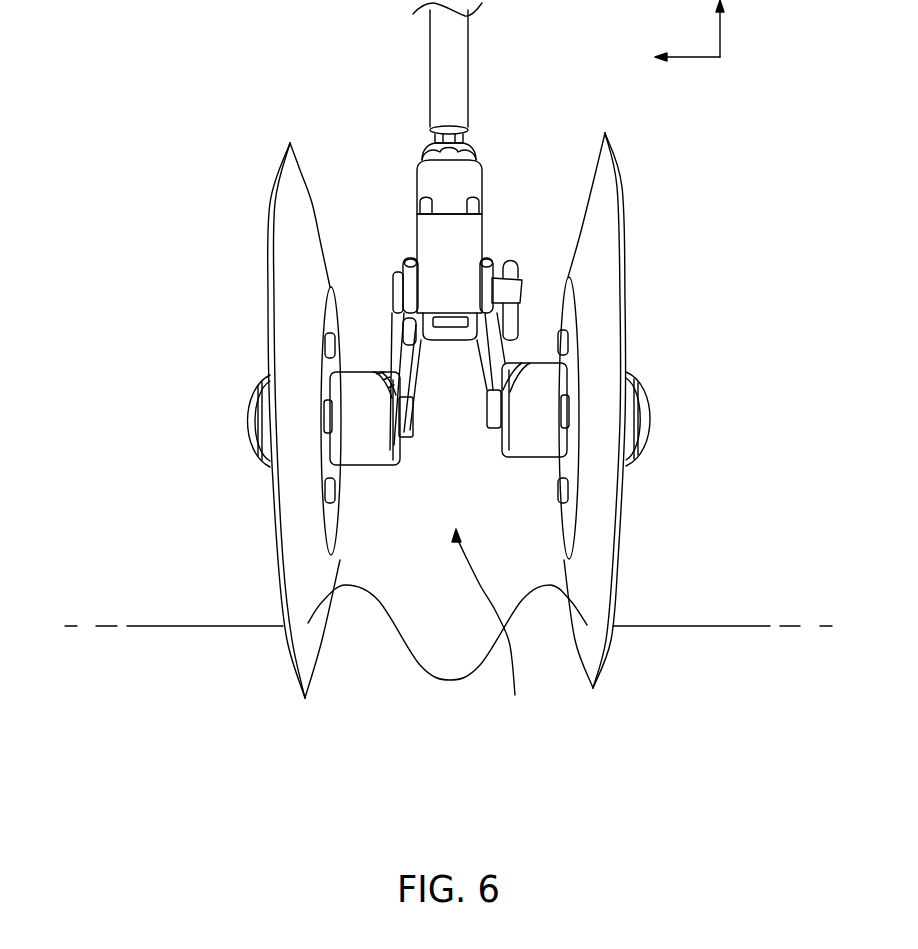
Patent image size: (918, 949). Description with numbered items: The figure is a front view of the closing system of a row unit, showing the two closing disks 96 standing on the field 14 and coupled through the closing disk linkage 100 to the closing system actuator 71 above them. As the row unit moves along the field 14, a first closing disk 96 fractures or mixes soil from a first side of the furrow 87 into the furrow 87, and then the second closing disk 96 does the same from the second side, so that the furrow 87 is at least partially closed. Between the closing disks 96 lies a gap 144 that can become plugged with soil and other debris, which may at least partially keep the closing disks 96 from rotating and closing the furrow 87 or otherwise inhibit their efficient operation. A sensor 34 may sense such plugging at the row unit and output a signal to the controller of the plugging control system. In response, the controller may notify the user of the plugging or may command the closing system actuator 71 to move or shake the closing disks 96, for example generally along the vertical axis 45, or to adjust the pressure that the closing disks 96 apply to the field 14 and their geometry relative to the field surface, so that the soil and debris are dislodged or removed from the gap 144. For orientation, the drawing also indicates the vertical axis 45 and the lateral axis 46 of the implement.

The field 14 is at (683, 626).
The sensor 34 is at (672, 172).
The vertical axis 45 is at (721, 30).
The lateral axis 46 is at (693, 58).
The closing system actuator 71 is at (468, 75).
The furrow 87 is at (415, 668).
The closing disks 96 is at (268, 322).
The closing disk linkage 100 is at (485, 260).
The gap 144 is at (493, 628).